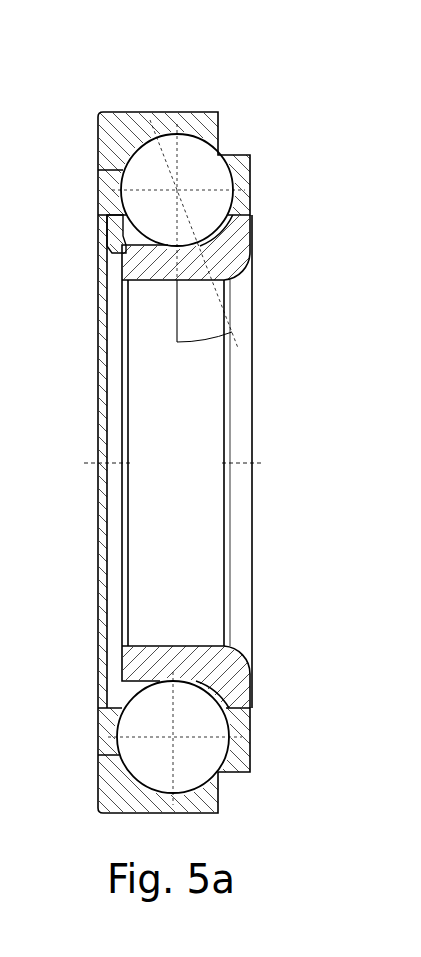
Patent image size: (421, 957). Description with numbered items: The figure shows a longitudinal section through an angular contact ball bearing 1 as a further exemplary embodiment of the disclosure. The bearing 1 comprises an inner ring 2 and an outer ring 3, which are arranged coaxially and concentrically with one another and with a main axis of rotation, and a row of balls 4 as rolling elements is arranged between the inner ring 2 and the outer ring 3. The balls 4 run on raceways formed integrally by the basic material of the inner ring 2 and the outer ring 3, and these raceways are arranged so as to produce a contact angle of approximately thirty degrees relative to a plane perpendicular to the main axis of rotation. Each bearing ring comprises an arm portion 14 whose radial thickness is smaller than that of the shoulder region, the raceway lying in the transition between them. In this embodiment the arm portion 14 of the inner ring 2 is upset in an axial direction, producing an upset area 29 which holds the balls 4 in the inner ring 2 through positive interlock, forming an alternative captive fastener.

The angular contact ball bearing 1 is at (181, 87).
The inner ring 2 is at (254, 237).
The outer ring 3 is at (219, 111).
The balls 4 is at (176, 462).
The arm portion 14 is at (158, 284).
The upset area 29 is at (112, 242).